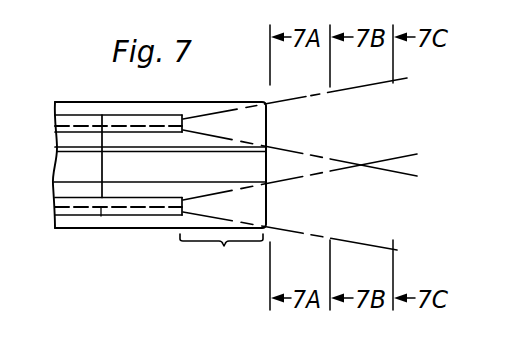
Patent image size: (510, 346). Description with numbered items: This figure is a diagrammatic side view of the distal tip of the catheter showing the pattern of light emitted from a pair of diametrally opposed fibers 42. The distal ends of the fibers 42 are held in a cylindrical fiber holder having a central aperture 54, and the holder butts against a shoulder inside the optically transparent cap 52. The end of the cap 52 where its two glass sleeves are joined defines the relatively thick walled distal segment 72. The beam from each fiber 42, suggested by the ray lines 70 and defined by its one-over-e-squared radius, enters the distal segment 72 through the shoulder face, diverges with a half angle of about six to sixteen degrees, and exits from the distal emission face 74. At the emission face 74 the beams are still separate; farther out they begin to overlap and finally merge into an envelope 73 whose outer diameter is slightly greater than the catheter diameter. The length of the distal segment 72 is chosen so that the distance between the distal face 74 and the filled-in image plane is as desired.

The optical fibers 42 is at (82, 123).
The optically transparent cap 52 is at (237, 102).
The central aperture 54 is at (157, 181).
The ray lines 70 is at (322, 93).
The distal segment 72 is at (221, 255).
The envelope 73 is at (383, 80).
The distal emission face 74 is at (267, 209).